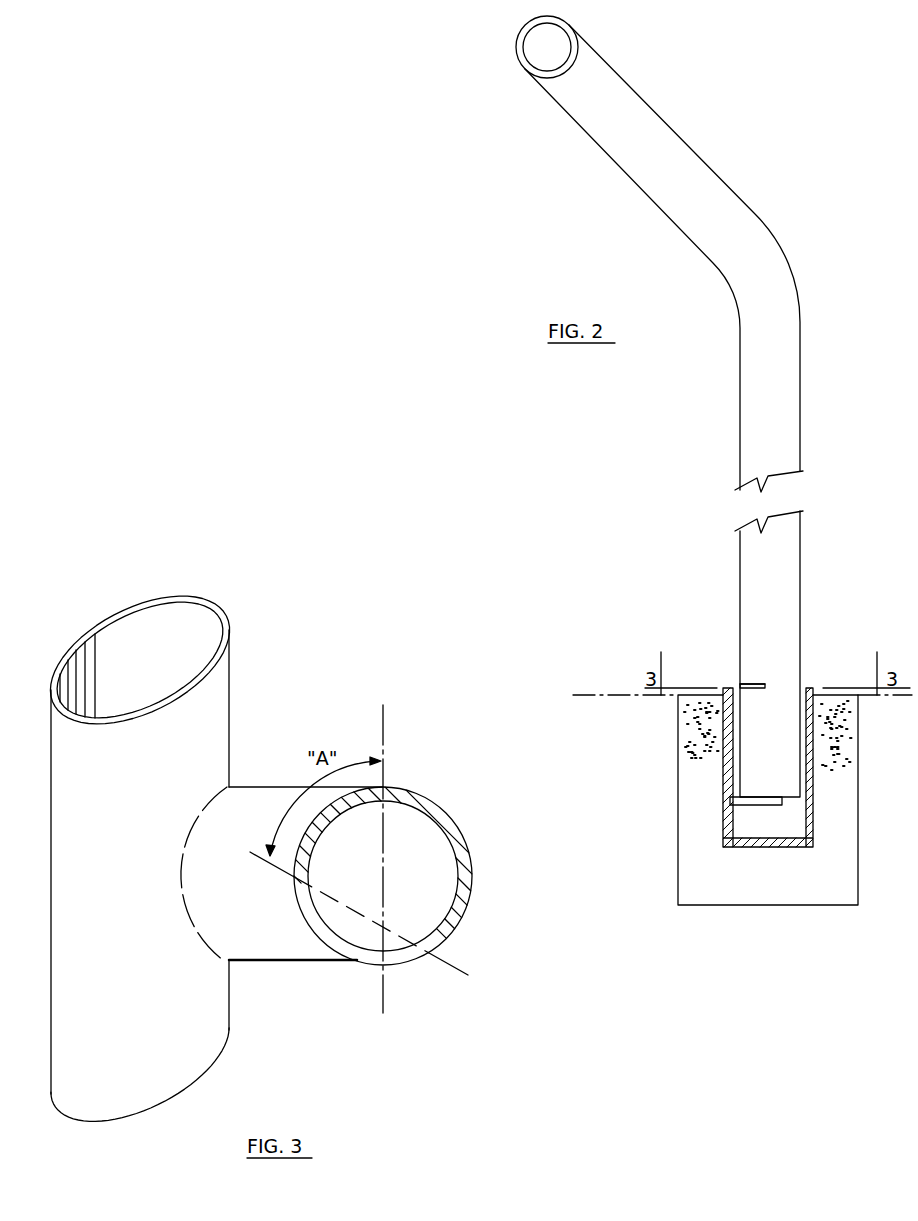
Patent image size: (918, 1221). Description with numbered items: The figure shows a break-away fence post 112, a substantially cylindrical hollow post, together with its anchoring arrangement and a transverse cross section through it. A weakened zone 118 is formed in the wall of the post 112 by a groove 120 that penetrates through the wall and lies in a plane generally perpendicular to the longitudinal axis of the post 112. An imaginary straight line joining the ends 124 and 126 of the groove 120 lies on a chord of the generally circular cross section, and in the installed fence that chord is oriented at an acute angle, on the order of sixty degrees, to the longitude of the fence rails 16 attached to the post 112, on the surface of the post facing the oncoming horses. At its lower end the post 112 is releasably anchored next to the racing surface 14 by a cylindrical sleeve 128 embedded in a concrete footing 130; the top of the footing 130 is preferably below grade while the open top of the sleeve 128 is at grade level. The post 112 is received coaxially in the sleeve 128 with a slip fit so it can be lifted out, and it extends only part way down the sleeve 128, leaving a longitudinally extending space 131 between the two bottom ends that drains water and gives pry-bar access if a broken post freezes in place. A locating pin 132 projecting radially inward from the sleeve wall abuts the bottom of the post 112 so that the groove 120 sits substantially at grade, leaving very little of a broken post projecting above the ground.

In FIG. 2, the racing surface 14 is at (610, 693).
In FIG. 2, the fence rails 16 is at (516, 52).
In FIG. 3, the fence rails 16 is at (96, 784).
In FIG. 2, the break-away fence post 112 is at (762, 228).
In FIG. 3, the break-away fence post 112 is at (278, 787).
In FIG. 2, the weakened zone 118 is at (735, 662).
In FIG. 3, the weakened zone 118 is at (348, 978).
In FIG. 2, the groove 120 is at (733, 682).
In FIG. 3, the groove 120 is at (325, 932).
In FIG. 2, the end of the groove 124 is at (772, 685).
In FIG. 3, the end of the groove 124 is at (300, 890).
In FIG. 3, the end of the groove 126 is at (413, 950).
In FIG. 2, the cylindrical sleeve 128 is at (813, 800).
In FIG. 2, the concrete footing 130 is at (838, 838).
In FIG. 2, the longitudinally extending space 131 is at (757, 827).
In FIG. 2, the locating pin 132 is at (748, 808).